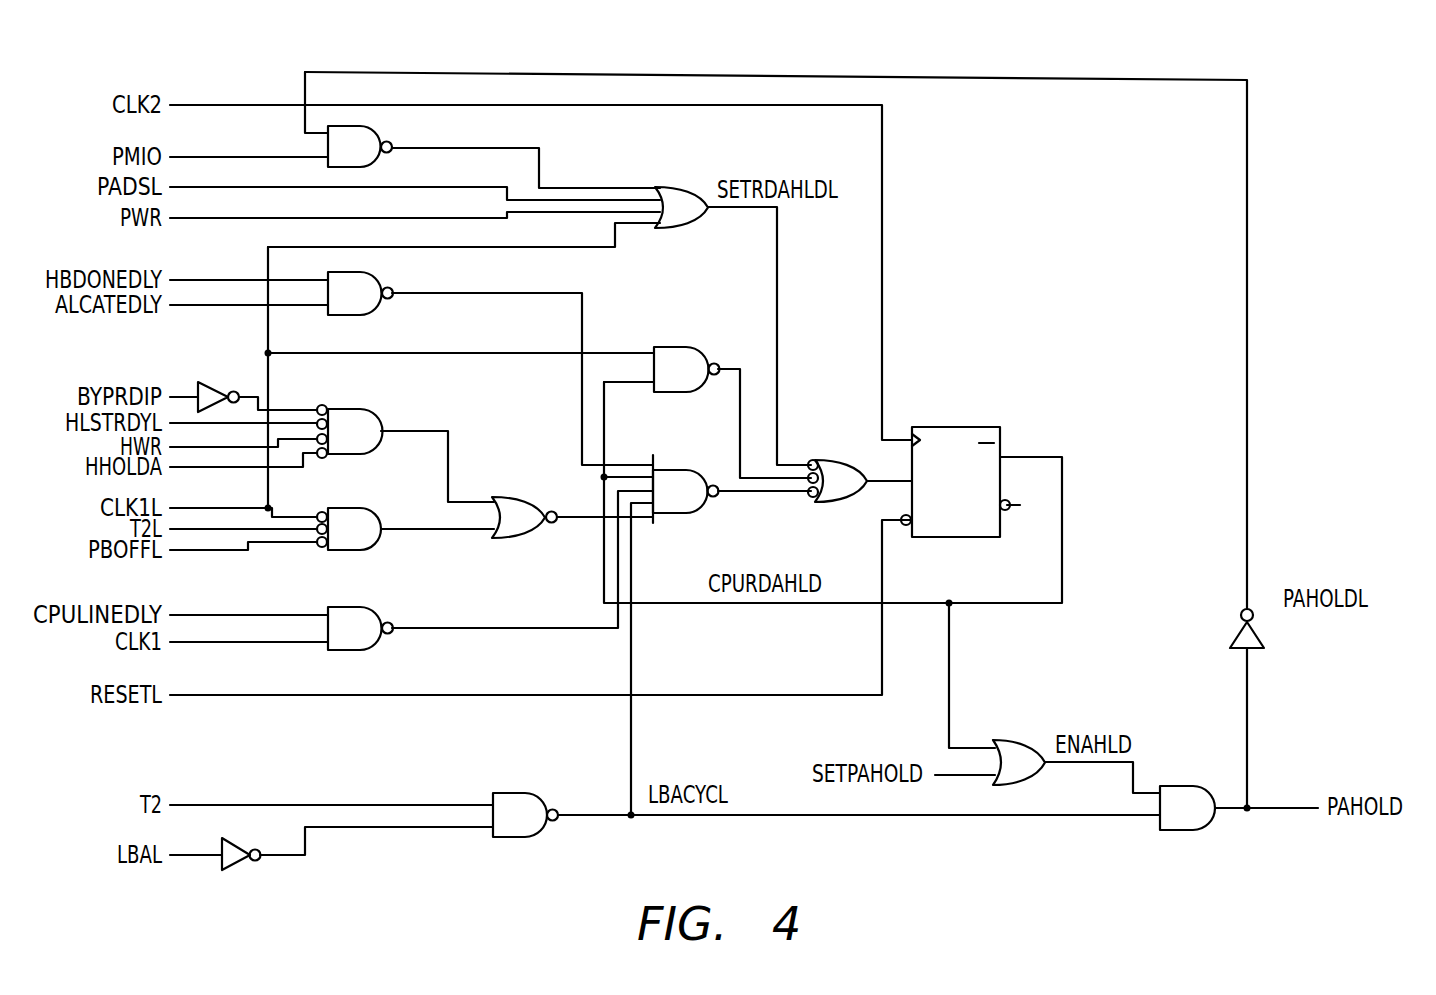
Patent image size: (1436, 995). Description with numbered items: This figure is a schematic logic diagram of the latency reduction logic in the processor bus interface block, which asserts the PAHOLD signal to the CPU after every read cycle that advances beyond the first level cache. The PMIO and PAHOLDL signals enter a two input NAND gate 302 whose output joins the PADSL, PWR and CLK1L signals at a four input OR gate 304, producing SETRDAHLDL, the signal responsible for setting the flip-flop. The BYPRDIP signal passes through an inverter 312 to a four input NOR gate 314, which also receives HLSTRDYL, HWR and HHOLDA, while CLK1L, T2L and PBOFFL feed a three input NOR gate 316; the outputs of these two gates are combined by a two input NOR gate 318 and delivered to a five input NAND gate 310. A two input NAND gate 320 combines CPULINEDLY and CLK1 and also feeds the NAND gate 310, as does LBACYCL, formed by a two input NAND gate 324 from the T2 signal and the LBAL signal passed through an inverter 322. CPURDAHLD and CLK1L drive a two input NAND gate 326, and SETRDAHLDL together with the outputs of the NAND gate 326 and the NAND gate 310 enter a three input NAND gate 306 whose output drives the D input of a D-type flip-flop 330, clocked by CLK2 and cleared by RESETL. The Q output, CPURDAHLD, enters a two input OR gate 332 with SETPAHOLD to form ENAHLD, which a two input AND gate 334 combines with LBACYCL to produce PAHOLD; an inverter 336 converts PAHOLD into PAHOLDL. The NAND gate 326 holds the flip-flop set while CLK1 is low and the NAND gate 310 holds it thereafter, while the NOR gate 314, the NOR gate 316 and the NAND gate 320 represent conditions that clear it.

The two input NAND gate 302 is at (377, 127).
The four input OR gate 304 is at (681, 187).
The three input NAND gate 306 is at (828, 460).
The five input NAND gate 310 is at (378, 274).
The inverter 312 is at (222, 341).
The four input NOR gate 314 is at (347, 409).
The three input NOR gate 316 is at (353, 508).
The two input NOR gate 318 is at (510, 497).
The two input NAND gate 320 is at (358, 607).
The inverter 322 is at (235, 862).
The two input NAND gate 324 is at (515, 793).
The two input NAND gate 326 is at (677, 347).
The D-type flip-flop 330 is at (965, 427).
The two input OR gate 332 is at (1008, 740).
The two input AND gate 334 is at (1175, 785).
The inverter 336 is at (1260, 634).